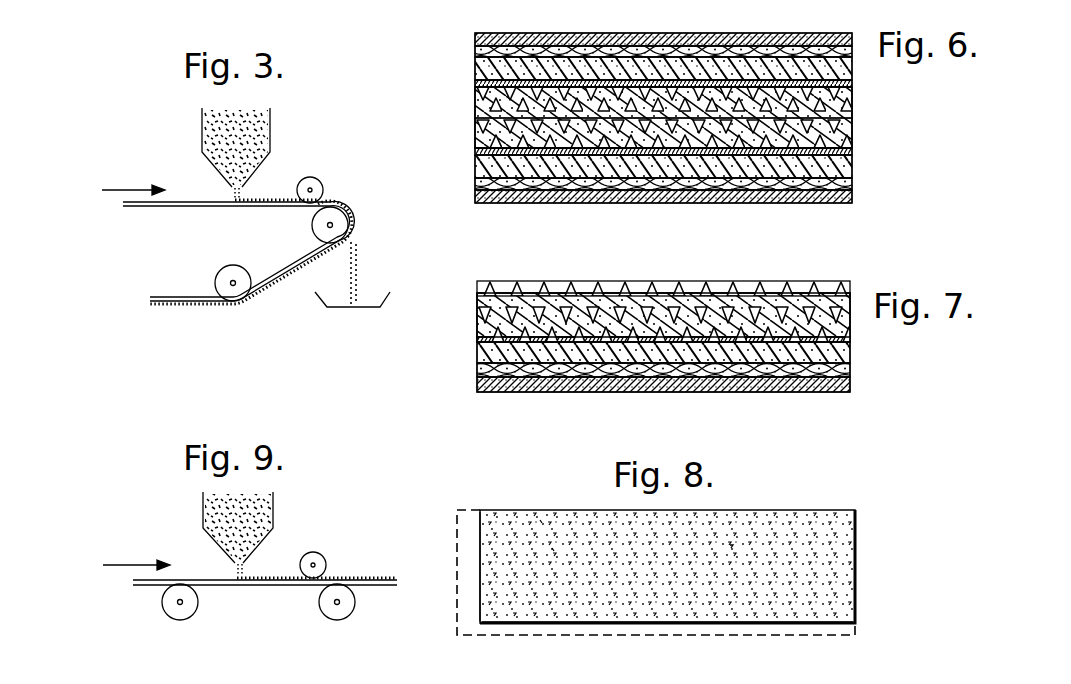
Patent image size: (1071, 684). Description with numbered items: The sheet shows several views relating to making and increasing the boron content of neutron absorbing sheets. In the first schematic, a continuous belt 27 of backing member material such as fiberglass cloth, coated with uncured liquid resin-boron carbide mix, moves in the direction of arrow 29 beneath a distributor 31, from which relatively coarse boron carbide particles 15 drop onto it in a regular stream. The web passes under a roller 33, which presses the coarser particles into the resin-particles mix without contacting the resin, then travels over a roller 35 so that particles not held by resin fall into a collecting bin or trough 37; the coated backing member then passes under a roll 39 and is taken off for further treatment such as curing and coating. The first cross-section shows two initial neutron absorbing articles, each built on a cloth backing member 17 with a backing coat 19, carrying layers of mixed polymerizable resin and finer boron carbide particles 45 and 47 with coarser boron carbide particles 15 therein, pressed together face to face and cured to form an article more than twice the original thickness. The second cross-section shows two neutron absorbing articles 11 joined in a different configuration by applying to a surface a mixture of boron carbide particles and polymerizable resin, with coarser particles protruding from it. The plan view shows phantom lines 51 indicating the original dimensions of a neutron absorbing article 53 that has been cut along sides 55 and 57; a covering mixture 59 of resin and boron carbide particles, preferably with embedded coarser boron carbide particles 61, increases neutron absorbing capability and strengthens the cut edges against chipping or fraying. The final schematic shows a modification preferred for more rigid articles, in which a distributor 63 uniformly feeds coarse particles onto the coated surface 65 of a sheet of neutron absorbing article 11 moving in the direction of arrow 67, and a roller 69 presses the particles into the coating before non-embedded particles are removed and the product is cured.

In FIG. 6, the neutron absorbing article 11 is at (462, 59).
In FIG. 7, the neutron absorbing article 11 is at (466, 363).
In FIG. 9, the neutron absorbing article 11 is at (138, 587).
In FIG. 3, the coarse boron carbide particles 15 is at (240, 195).
In FIG. 6, the coarse boron carbide particles 15 is at (475, 152).
In FIG. 7, the coarse boron carbide particles 15 is at (675, 288).
In FIG. 9, the coarse boron carbide particles 15 is at (273, 573).
In FIG. 6, the cloth backing member 17 is at (470, 48).
In FIG. 6, the backing coat 19 is at (475, 37).
In FIG. 3, the continuous belt 27 is at (180, 200).
In FIG. 3, the arrow 29 is at (117, 183).
In FIG. 3, the distributor 31 is at (271, 125).
In FIG. 3, the roller 33 is at (321, 182).
In FIG. 3, the roller 35 is at (310, 222).
In FIG. 3, the collecting bin or trough 37 is at (386, 297).
In FIG. 3, the roll 39 is at (215, 281).
In FIG. 6, the layer of mixed polymerizable resin and finer boron carbide particles 45 is at (853, 95).
In FIG. 6, the layer of mixed polymerizable resin and finer boron carbide particles 47 is at (853, 132).
In FIG. 8, the phantom lines 51 is at (593, 637).
In FIG. 8, the neutron absorbing article 53 is at (855, 558).
In FIG. 8, the side 55 is at (733, 625).
In FIG. 8, the side 57 is at (478, 540).
In FIG. 8, the mixture of resin and boron carbide particles 59 is at (733, 540).
In FIG. 8, the coarser boron carbide particles 61 is at (557, 535).
In FIG. 9, the distributor 63 is at (275, 505).
In FIG. 9, the coated surface 65 is at (202, 577).
In FIG. 9, the arrow 67 is at (117, 563).
In FIG. 9, the roller 69 is at (323, 557).